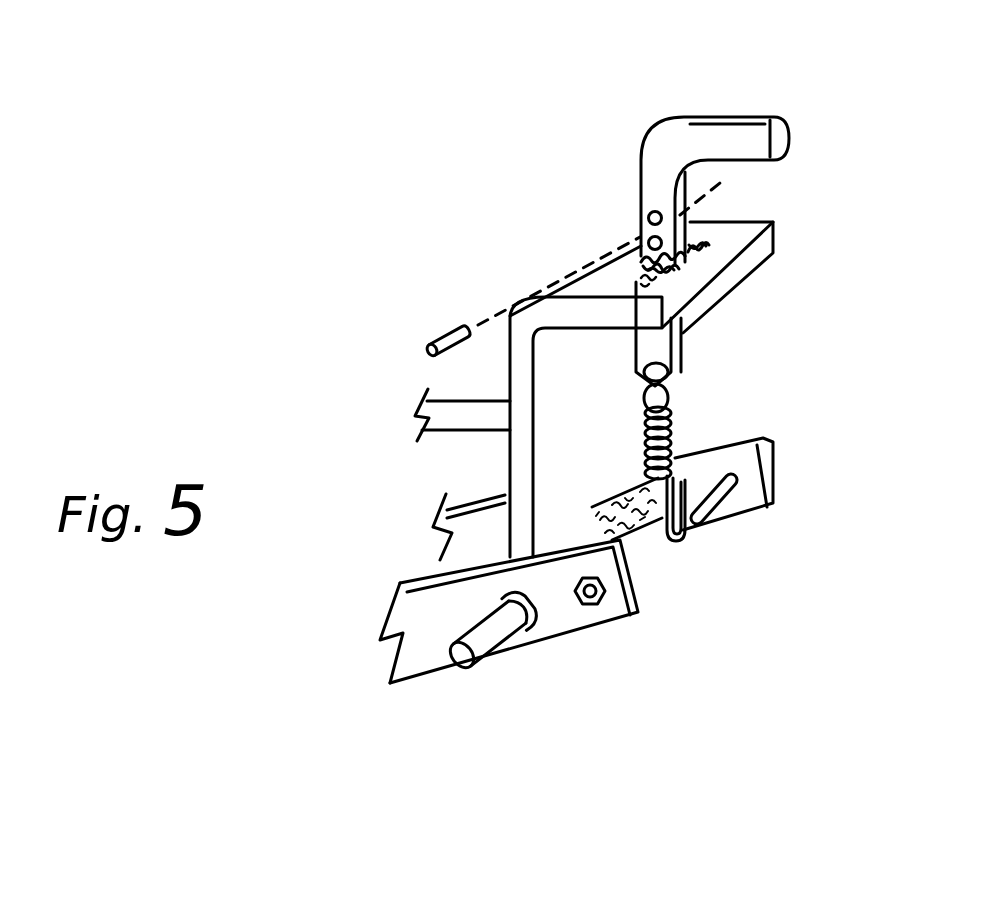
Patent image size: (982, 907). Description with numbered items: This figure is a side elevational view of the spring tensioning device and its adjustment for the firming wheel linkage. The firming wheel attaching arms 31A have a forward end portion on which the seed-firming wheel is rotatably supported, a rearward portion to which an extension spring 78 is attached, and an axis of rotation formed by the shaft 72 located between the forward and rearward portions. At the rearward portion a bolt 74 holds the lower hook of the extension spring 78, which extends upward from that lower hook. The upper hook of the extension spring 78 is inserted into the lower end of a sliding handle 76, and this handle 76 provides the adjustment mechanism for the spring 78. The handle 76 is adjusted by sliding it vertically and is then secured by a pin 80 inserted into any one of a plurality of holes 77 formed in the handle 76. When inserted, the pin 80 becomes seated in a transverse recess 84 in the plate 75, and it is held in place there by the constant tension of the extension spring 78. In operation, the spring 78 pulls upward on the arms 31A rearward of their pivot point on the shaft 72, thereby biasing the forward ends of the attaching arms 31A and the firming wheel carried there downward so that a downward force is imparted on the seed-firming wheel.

The firming wheel attaching arms 31A is at (428, 534).
The shaft 72 is at (468, 679).
The bolt 74 is at (658, 559).
The plate 75 is at (505, 353).
The sliding handle 76 is at (732, 118).
The holes 77 is at (647, 239).
The extension spring 78 is at (677, 428).
The pin 80 is at (437, 337).
The transverse recess 84 is at (659, 280).